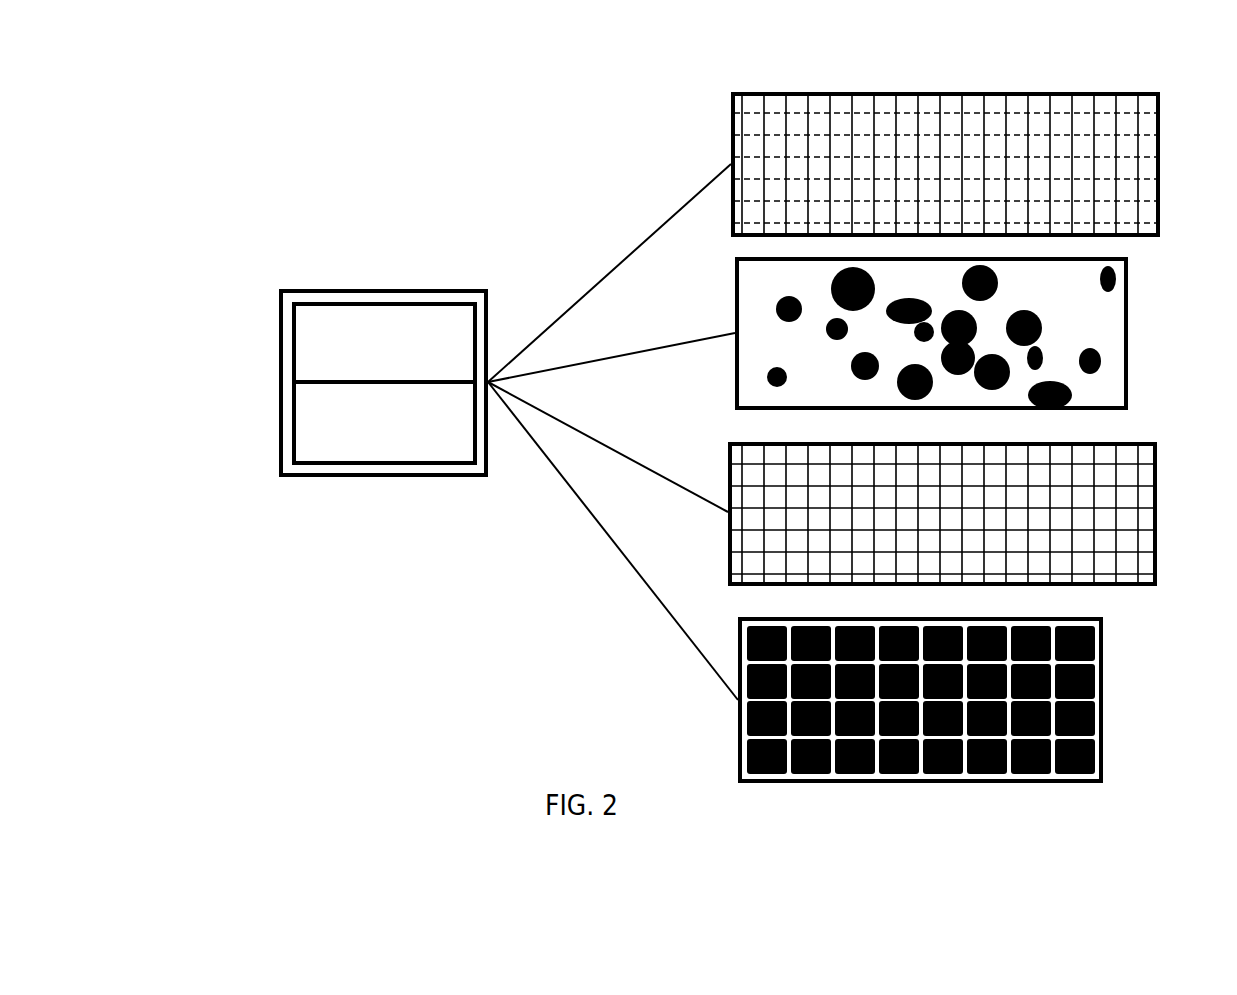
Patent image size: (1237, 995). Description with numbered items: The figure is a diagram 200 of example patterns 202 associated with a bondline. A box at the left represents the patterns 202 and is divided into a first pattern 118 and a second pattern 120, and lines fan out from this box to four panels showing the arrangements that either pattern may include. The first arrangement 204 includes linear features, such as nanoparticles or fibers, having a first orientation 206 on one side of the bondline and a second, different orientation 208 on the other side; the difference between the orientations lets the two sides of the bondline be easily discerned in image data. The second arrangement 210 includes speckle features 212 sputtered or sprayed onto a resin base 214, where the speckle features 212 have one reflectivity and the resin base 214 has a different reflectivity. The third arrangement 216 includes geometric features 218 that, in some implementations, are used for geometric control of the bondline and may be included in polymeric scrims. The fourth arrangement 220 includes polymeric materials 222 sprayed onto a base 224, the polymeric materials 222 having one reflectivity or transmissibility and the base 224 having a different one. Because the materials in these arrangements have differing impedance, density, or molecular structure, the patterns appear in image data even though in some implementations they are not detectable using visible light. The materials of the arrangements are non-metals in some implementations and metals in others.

The diagram 200 is at (254, 174).
The example patterns 202 is at (383, 425).
The first pattern 118 is at (409, 359).
The second pattern 120 is at (409, 440).
The first arrangement 204 is at (981, 133).
The first orientation 206 is at (830, 105).
The second orientation 208 is at (886, 113).
The second arrangement 210 is at (974, 334).
The speckle features 212 is at (1000, 283).
The resin base 214 is at (1093, 320).
The third arrangement 216 is at (979, 514).
The geometric features 218 is at (1147, 495).
The fourth arrangement 220 is at (977, 693).
The polymeric materials 222 is at (1097, 652).
The base 224 is at (1097, 625).